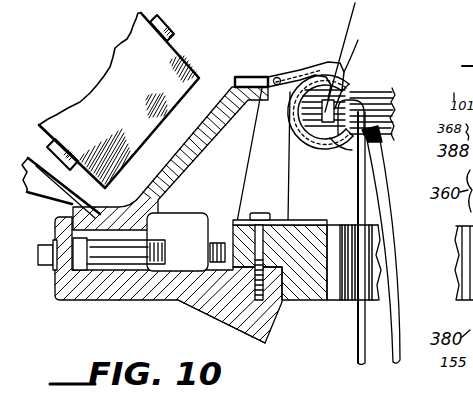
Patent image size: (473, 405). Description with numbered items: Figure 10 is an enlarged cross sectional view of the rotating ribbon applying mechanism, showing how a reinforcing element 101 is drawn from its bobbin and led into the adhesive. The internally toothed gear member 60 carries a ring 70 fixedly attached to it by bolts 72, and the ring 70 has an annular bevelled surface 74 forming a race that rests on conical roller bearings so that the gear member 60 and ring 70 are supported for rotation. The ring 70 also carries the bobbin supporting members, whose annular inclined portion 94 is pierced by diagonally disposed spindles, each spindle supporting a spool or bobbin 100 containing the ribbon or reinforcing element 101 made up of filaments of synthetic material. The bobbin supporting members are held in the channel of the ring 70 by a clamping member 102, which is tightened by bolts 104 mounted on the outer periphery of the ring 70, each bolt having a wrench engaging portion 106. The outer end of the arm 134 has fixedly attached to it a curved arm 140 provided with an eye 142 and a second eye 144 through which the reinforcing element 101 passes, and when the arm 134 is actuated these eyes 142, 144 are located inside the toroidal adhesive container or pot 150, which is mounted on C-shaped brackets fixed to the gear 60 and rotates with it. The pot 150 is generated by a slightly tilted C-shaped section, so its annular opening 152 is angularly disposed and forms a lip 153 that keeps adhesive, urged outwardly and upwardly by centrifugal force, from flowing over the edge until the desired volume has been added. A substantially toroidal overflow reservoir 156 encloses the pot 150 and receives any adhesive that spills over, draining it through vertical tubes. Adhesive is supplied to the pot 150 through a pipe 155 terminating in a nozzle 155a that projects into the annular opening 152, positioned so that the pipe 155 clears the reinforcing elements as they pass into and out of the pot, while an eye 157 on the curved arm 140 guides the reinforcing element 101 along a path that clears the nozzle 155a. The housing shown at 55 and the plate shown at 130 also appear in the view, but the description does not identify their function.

The housing 55 is at (258, 176).
The internally toothed gear member 60 is at (286, 302).
The ring 70 is at (248, 330).
The bolts 72 is at (272, 217).
The annular bevelled surface 74 is at (232, 320).
The annular inclined portion 94 is at (72, 204).
The spool or bobbin 100 is at (96, 88).
The reinforcing element 101 is at (346, 30).
The clamping member 102 is at (194, 215).
The bolts 104 is at (115, 262).
The wrench engaging portion 106 is at (43, 266).
The mounting plate 130 is at (252, 77).
The arm 134 is at (328, 65).
The curved arm 140 is at (348, 62).
The eye 142 is at (305, 113).
The second eye 144 is at (308, 124).
The toroidal adhesive container or pot 150 is at (388, 91).
The annular opening 152 is at (386, 108).
The lip 153 is at (380, 84).
The pipe 155 is at (357, 346).
The nozzle 155a is at (352, 92).
The overflow reservoir 156 is at (340, 150).
The eye 157 is at (350, 88).